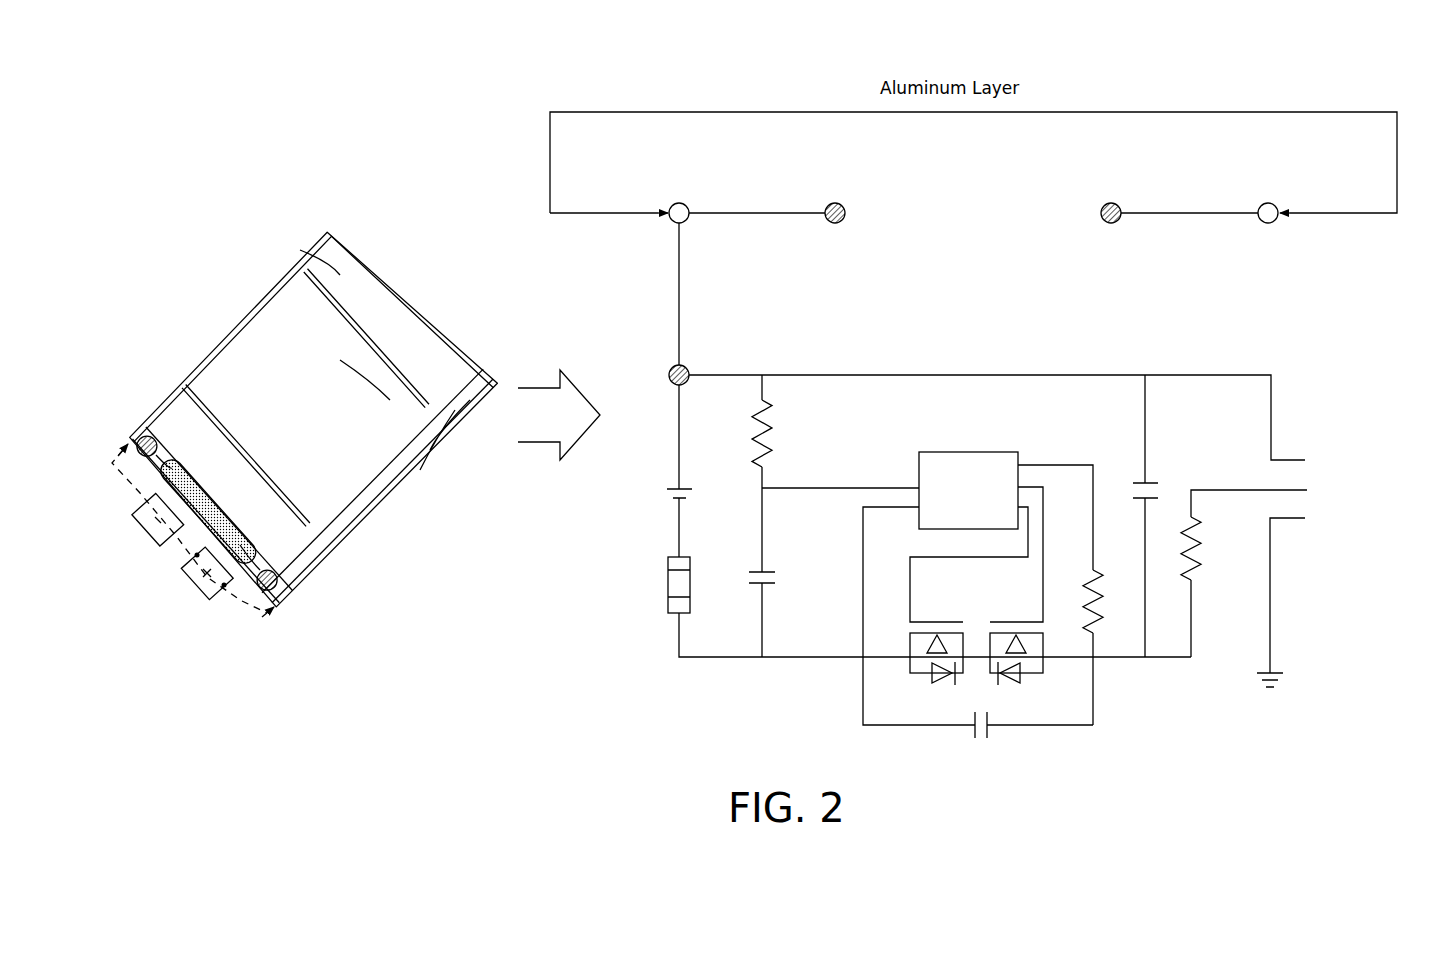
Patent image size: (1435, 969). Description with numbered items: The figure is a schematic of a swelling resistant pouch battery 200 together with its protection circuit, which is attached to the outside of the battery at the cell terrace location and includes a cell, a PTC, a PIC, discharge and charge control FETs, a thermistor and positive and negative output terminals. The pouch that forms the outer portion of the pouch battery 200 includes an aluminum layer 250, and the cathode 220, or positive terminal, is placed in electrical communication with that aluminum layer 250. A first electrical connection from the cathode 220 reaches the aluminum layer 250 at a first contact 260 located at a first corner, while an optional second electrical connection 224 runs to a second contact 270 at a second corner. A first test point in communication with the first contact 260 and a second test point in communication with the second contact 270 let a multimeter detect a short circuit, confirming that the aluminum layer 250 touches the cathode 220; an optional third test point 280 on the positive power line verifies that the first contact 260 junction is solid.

The swelling resistant pouch battery 200 is at (245, 204).
The cathode 220 is at (200, 590).
The second electrical connection 224 is at (247, 617).
The aluminum layer 250 is at (1312, 111).
The first contact 260 is at (686, 221).
The second contact 270 is at (1275, 222).
The third test point 280 is at (669, 370).